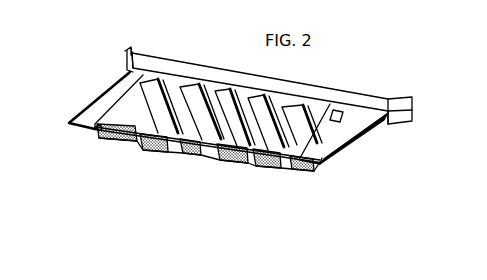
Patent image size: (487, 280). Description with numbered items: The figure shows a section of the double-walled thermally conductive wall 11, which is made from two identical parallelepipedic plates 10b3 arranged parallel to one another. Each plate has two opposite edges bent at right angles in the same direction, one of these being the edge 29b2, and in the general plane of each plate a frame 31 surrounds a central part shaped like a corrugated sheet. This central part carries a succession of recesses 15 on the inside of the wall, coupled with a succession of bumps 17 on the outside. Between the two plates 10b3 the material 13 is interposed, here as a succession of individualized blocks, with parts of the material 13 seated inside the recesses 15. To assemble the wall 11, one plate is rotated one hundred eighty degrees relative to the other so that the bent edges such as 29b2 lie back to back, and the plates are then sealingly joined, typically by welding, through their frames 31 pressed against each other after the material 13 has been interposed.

The thermally conductive wall 11 is at (200, 142).
The material 13 is at (153, 143).
The recesses 15 is at (280, 187).
The bumps 17 is at (220, 90).
The frame 31 is at (90, 110).
The bent edge 29b2 is at (312, 90).
The parallelepipedic plate 10b3 is at (360, 114).